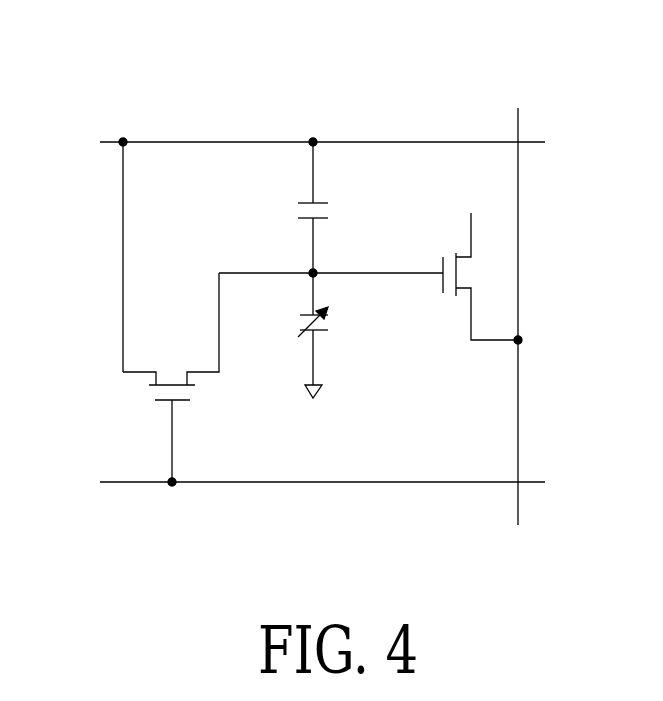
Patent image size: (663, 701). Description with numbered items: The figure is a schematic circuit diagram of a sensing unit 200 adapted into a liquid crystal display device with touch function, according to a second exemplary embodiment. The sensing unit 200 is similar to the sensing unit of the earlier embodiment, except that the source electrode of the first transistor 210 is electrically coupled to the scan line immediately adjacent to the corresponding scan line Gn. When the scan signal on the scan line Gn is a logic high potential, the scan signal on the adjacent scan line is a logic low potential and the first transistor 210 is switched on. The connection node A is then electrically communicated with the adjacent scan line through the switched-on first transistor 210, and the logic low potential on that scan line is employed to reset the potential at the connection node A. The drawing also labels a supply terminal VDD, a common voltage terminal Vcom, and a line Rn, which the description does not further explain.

The sensing unit 200 is at (343, 49).
The first transistor 210 is at (162, 401).
The connection node A is at (331, 257).
The supply voltage / driving transistor VDD is at (482, 262).
The common voltage / liquid crystal capacitor Vcom is at (336, 359).
The scan line Gn is at (305, 483).
The readout line n Rn is at (518, 336).